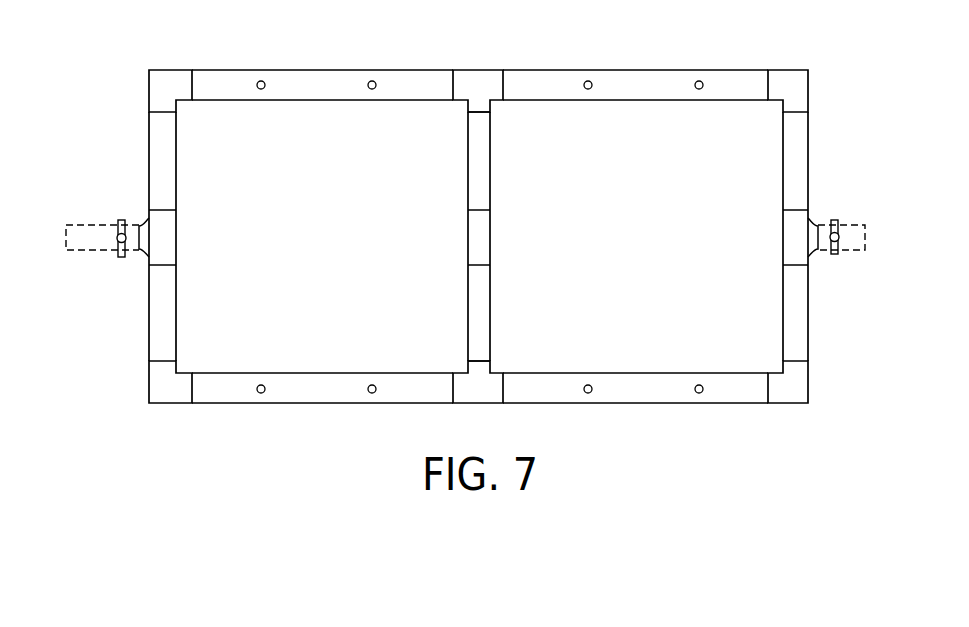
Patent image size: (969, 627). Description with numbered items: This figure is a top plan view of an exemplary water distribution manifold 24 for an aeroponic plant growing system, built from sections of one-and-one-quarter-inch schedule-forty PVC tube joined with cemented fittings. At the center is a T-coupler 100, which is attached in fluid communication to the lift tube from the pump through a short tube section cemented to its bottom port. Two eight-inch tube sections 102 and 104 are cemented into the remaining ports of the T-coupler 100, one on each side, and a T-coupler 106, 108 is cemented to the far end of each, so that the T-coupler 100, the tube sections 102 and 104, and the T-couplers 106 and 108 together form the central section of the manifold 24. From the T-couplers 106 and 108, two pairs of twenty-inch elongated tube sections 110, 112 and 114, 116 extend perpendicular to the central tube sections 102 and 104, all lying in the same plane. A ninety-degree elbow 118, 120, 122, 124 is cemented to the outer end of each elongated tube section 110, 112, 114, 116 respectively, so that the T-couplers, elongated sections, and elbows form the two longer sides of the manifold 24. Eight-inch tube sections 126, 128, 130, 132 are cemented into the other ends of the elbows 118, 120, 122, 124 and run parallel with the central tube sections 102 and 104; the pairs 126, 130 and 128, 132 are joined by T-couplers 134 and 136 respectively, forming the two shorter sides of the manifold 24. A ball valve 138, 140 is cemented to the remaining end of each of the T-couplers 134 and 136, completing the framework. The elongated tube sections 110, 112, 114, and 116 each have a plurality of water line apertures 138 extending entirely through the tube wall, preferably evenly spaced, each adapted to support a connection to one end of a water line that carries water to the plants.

The water distribution manifold 24 is at (260, 412).
The T-coupler 100 is at (490, 228).
The tube section 102 is at (490, 178).
The tube section 104 is at (490, 312).
The T-coupler 106 is at (478, 70).
The T-coupler 108 is at (485, 405).
The elongated tube section 110 is at (345, 100).
The elongated tube section 112 is at (638, 100).
The elongated tube section 114 is at (305, 373).
The elongated tube section 116 is at (662, 373).
The 90 degree elbow 118 is at (176, 70).
The 90 degree elbow 120 is at (790, 70).
The 90 degree elbow 122 is at (173, 405).
The 90 degree elbow 124 is at (785, 403).
The tube section 126 is at (178, 150).
The tube section 128 is at (782, 172).
The tube section 130 is at (178, 318).
The tube section 132 is at (782, 315).
The T-coupler 134 is at (178, 238).
The T-coupler 136 is at (782, 237).
The water line apertures 138 is at (94, 220).
The valve 140 is at (855, 250).